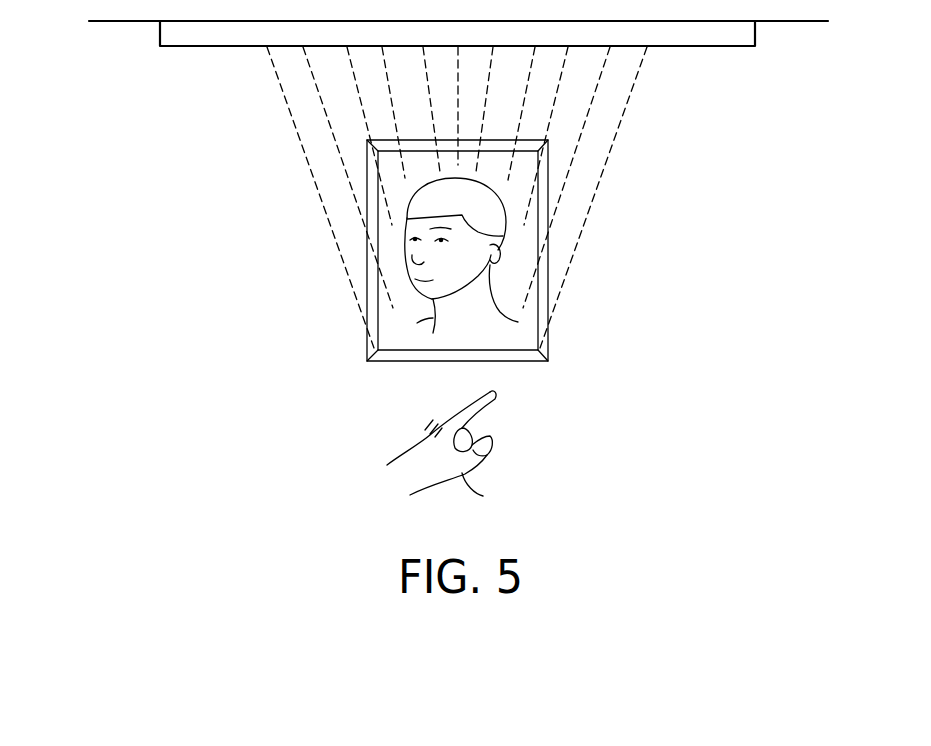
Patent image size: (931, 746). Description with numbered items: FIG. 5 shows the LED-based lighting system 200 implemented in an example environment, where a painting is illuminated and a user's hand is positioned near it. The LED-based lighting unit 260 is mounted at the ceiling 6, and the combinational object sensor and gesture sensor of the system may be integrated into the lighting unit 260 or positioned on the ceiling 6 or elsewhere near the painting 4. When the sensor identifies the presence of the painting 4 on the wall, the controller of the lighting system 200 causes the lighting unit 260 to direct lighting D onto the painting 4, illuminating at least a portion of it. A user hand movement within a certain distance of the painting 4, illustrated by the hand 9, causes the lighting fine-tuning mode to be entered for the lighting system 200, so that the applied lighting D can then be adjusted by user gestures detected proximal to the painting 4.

The ceiling 6 is at (125, 22).
The LED-based lighting unit 260 is at (202, 47).
The lighting D is at (610, 90).
The lighting system 200 is at (237, 222).
The painting 4 is at (393, 362).
The hand 9 is at (483, 496).